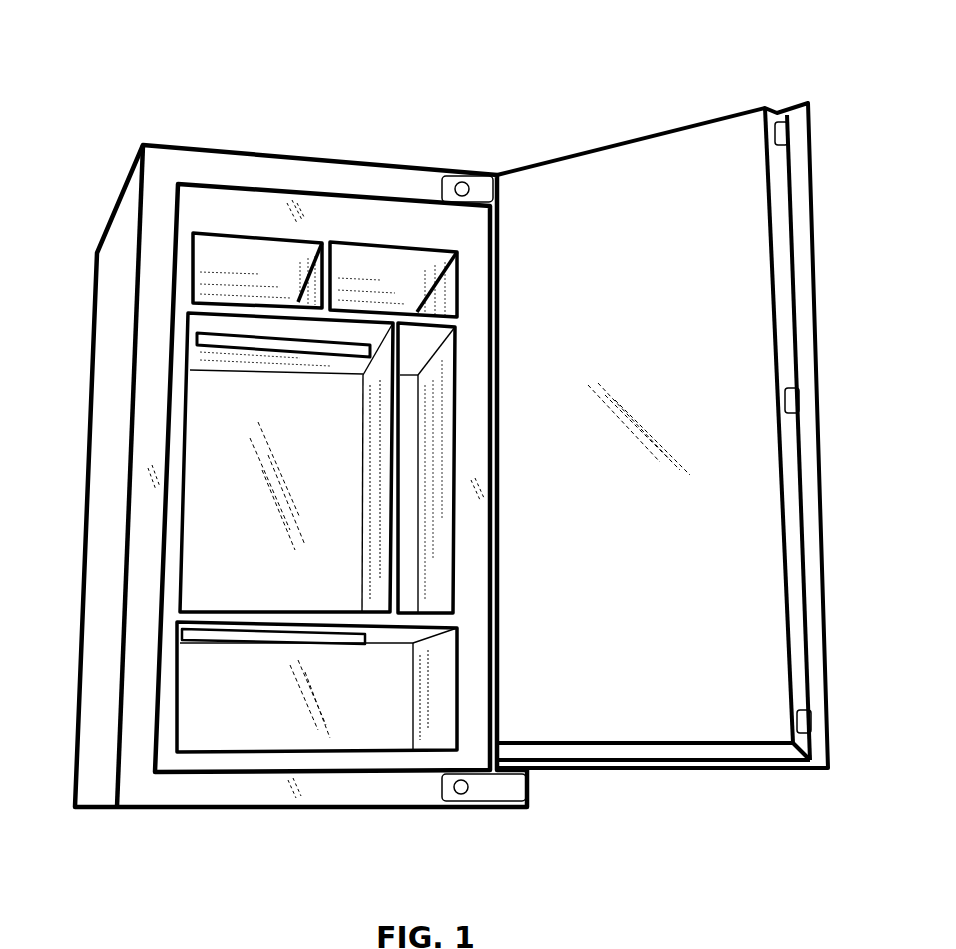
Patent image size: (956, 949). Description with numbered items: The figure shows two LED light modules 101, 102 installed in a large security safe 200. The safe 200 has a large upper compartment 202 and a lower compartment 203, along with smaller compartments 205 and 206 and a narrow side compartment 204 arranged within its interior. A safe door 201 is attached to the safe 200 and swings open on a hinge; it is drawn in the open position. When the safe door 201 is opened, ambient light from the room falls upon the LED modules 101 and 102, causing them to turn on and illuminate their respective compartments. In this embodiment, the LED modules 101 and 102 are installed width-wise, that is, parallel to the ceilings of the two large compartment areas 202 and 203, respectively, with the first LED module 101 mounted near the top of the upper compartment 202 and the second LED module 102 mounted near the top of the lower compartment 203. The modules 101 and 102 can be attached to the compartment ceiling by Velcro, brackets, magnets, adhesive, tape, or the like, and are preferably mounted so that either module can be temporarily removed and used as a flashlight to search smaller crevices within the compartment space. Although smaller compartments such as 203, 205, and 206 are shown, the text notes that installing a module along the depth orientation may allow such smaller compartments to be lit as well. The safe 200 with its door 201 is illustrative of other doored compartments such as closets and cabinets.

The security safe 200 is at (80, 88).
The safe door 201 is at (676, 143).
The upper compartment 202 is at (203, 505).
The lower compartment 203 is at (188, 702).
The narrow side compartment 204 is at (453, 327).
The smaller compartment 205 is at (210, 254).
The smaller compartment 206 is at (378, 257).
The LED module 101 is at (188, 350).
The LED module 102 is at (183, 641).